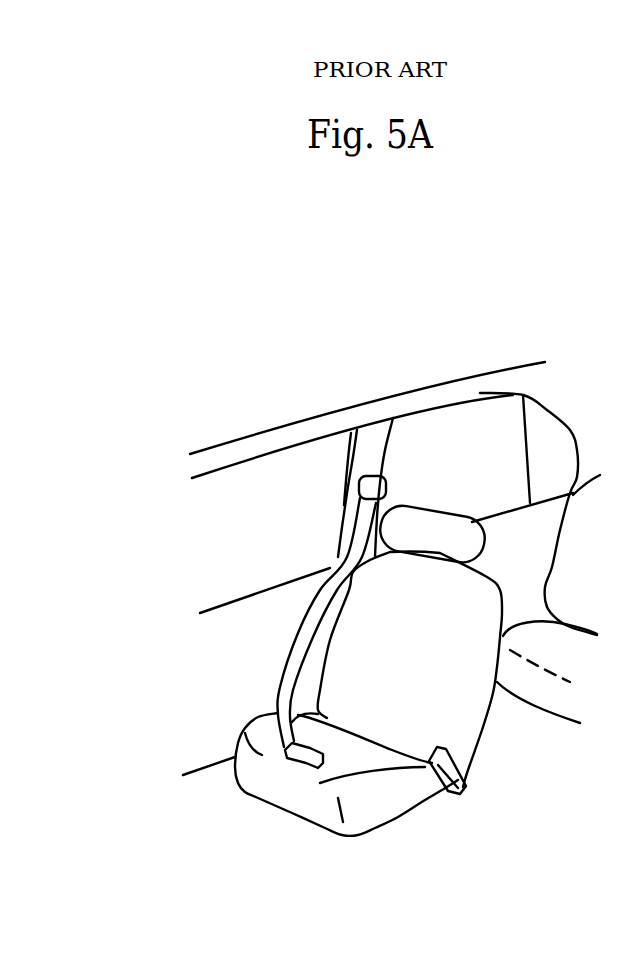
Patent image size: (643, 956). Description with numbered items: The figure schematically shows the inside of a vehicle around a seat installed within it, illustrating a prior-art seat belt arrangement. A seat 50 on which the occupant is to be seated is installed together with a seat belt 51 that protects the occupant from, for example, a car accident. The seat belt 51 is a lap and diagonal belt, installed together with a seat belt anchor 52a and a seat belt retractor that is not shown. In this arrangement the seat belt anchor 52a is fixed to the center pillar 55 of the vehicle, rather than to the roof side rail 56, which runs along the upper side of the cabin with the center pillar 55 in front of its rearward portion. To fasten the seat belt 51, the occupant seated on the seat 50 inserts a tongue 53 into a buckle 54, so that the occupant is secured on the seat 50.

The seat 50 is at (457, 732).
The seat belt 51 is at (290, 673).
The seat belt anchor 52a is at (370, 476).
The tongue 53 is at (284, 762).
The buckle 54 is at (437, 775).
The center pillar 55 is at (350, 502).
The roof side rail 56 is at (448, 390).